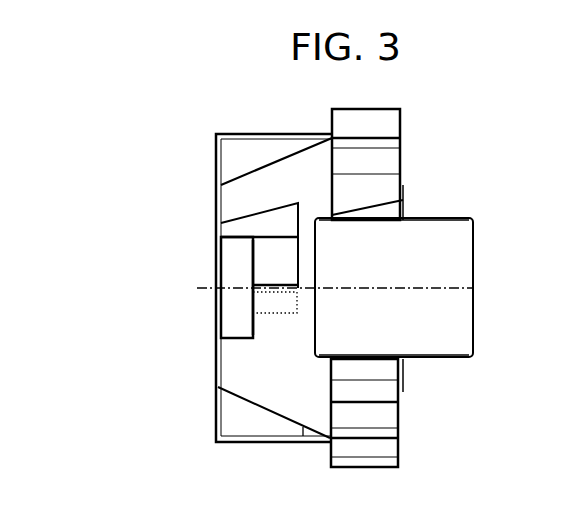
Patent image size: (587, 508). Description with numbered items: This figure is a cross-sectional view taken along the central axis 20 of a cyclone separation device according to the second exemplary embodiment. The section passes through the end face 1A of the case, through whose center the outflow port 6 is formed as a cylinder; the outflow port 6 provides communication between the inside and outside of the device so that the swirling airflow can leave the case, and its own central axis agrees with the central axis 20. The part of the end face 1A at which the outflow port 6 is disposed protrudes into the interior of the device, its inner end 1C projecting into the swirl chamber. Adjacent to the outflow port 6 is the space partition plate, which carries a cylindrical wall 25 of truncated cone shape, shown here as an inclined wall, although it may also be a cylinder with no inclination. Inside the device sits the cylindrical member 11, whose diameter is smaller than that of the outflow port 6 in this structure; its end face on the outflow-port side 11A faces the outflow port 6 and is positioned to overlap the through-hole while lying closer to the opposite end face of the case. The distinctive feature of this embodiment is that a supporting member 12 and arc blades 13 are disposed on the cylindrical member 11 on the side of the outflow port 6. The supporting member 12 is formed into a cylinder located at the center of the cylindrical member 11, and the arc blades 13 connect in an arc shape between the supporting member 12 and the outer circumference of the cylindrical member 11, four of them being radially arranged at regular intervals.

The end face 1A is at (400, 165).
The end 1C is at (403, 200).
The outflow port 6 is at (418, 248).
The cylindrical member 11 is at (233, 325).
The end face on the outflow-port side 11A is at (250, 267).
The supporting member 12 is at (253, 293).
The arc blades 13 is at (275, 258).
The central axis 20 is at (473, 287).
The cylindrical wall 25 is at (253, 167).